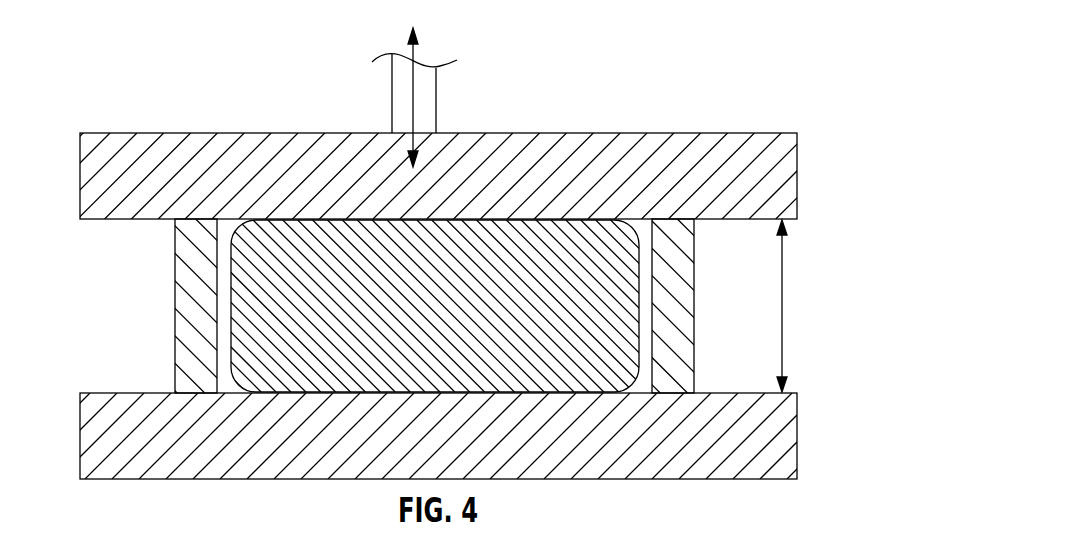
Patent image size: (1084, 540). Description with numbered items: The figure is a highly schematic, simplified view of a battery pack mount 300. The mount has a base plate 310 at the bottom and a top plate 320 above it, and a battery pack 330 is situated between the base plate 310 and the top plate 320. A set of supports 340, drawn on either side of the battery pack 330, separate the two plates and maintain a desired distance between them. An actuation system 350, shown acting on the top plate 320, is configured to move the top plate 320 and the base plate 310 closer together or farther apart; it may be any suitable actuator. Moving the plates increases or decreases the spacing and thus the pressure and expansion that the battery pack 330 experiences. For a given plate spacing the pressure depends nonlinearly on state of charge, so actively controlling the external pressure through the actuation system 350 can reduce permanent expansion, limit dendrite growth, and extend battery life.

The battery pack mount 300 is at (758, 41).
The base plate 310 is at (778, 445).
The top plate 320 is at (638, 157).
The battery pack 330 is at (459, 318).
The supports 340 is at (193, 312).
The actuation system 350 is at (413, 110).